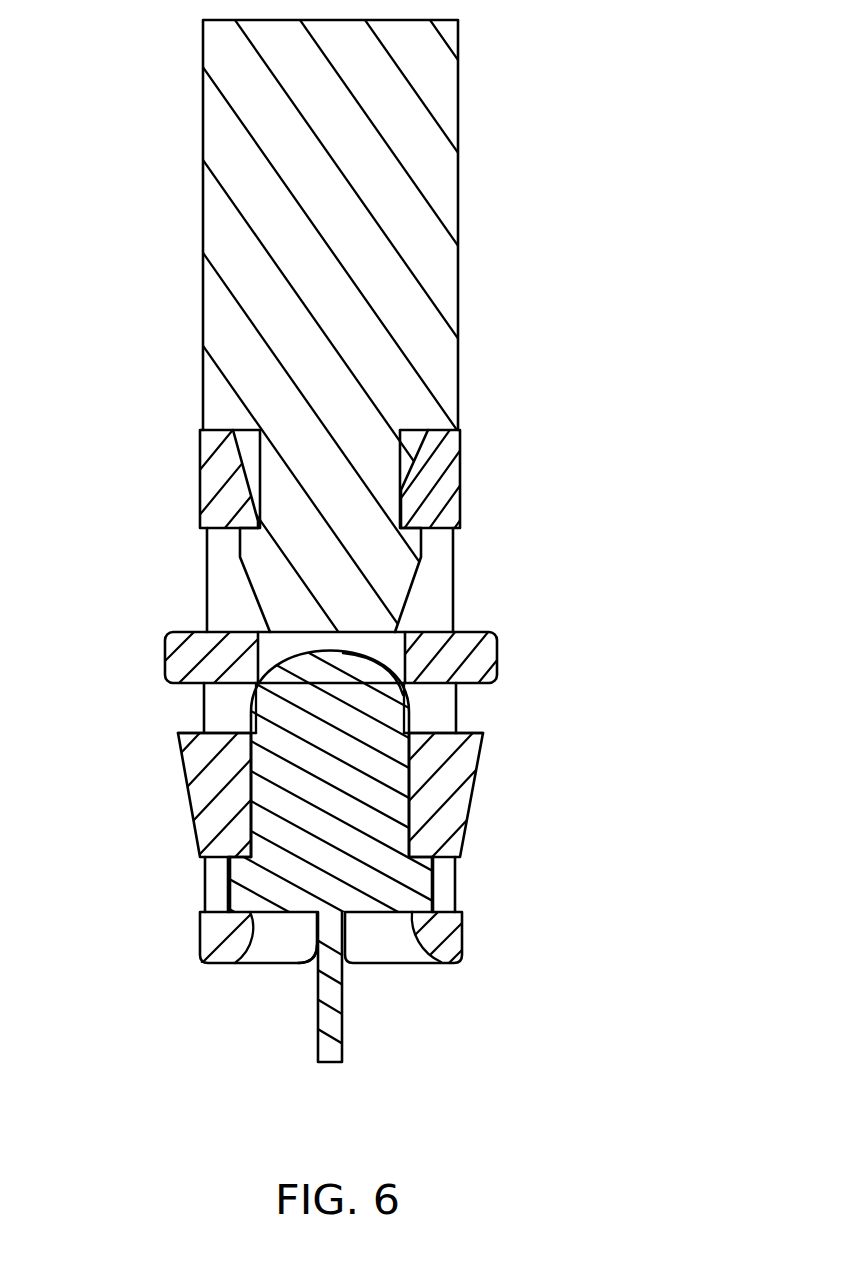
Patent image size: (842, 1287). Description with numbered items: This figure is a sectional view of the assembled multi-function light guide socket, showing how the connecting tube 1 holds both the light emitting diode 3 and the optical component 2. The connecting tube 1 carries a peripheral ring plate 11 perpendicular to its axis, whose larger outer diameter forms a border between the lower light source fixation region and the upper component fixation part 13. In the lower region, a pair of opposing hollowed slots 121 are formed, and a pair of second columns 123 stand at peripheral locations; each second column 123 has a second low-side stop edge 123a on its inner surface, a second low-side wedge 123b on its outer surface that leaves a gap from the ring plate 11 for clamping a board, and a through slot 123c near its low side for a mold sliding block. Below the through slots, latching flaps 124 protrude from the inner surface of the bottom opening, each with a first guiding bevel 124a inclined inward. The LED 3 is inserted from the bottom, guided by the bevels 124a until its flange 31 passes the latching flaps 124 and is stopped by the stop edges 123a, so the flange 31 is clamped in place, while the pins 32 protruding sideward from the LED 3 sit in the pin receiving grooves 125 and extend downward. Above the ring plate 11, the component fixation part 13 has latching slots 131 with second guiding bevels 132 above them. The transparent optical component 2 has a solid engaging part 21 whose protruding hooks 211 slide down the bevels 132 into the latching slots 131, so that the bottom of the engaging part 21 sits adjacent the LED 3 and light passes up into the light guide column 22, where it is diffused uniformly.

The connecting tube 1 is at (346, 742).
The peripheral ring plate 11 is at (300, 745).
The hollowed slot 121 is at (290, 655).
The second column 123 is at (381, 766).
The second low-side stop edge 123a is at (222, 850).
The second low-side wedge 123b is at (473, 734).
The through slot 123c is at (447, 870).
The latching flap 124 is at (298, 996).
The first guiding bevel 124a is at (243, 945).
The pin receiving groove 125 is at (297, 963).
The component fixation part 13 is at (313, 526).
The latching slot 131 is at (227, 585).
The second guiding bevel 132 is at (245, 457).
The optical component 2 is at (421, 320).
The engaging part 21 is at (330, 582).
The protruding hook 211 is at (253, 545).
The light guide column 22 is at (407, 227).
The light emitting diode 3 is at (393, 835).
The flange 31 is at (447, 887).
The pin 32 is at (333, 1023).